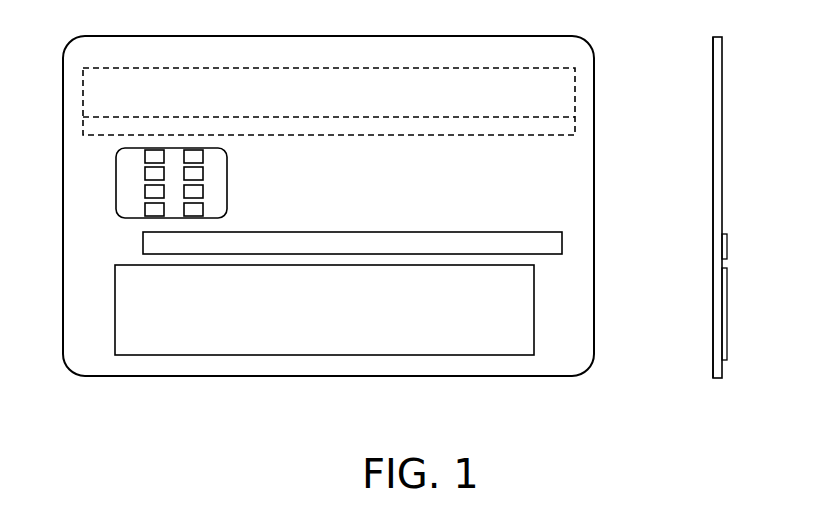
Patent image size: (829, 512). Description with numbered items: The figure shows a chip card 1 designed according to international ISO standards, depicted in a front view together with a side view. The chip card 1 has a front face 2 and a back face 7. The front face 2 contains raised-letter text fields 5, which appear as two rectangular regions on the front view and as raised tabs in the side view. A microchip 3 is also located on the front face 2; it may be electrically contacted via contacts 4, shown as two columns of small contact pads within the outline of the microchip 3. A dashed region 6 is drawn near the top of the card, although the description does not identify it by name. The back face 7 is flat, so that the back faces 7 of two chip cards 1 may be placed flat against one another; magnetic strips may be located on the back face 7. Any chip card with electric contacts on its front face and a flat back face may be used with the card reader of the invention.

The chip card 1 is at (410, 227).
The front face 2 is at (594, 336).
The microchip 3 is at (175, 155).
The contacts 4 is at (145, 156).
The raised-letter text fields 5 is at (345, 238).
The magnetic stripe region 6 is at (286, 73).
The back face 7 is at (713, 144).